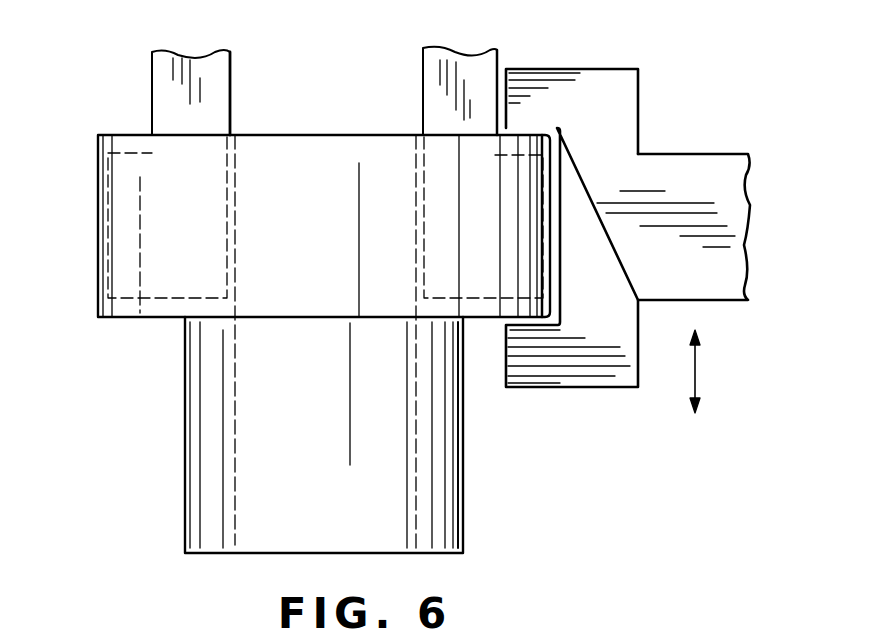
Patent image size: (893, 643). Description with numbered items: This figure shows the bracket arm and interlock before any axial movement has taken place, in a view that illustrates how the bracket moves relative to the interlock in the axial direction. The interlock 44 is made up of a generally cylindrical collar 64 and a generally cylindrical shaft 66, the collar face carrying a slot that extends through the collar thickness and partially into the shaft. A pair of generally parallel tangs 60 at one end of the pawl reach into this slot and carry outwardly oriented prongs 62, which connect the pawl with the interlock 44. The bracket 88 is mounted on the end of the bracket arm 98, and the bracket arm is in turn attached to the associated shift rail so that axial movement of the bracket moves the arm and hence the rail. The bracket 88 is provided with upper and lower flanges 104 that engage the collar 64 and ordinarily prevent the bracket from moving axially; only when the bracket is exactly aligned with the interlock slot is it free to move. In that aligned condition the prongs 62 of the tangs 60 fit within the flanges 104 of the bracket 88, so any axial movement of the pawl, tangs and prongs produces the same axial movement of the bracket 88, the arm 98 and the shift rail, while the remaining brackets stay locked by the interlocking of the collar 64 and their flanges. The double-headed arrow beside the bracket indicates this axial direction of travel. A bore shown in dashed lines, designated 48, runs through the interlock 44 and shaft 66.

The interlock 44 is at (158, 465).
The bore 48 is at (236, 522).
The tangs 60 is at (217, 92).
The prongs 62 is at (123, 157).
The collar 64 is at (112, 318).
The shaft 66 is at (463, 500).
The bracket 88 is at (603, 390).
The bracket arm 98 is at (712, 170).
The flanges 104 is at (542, 82).